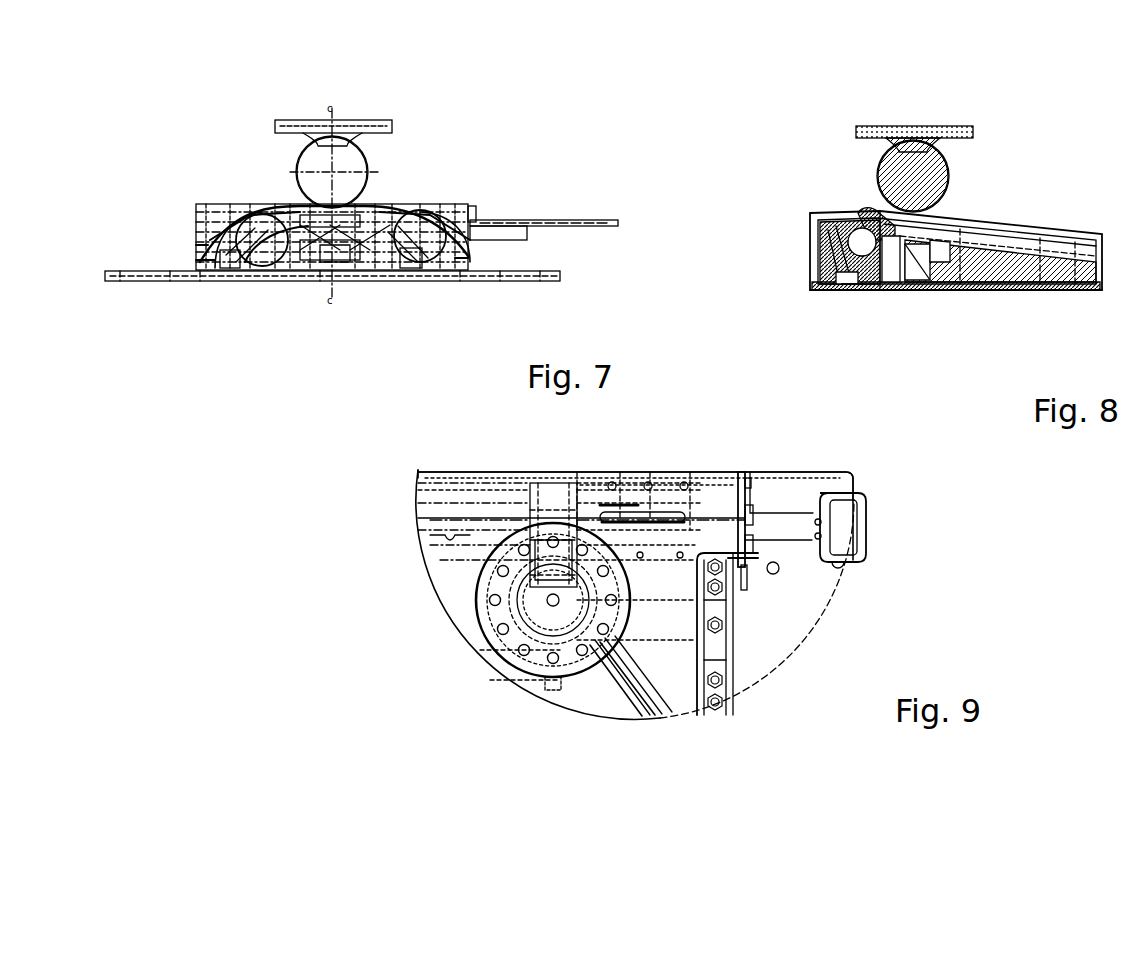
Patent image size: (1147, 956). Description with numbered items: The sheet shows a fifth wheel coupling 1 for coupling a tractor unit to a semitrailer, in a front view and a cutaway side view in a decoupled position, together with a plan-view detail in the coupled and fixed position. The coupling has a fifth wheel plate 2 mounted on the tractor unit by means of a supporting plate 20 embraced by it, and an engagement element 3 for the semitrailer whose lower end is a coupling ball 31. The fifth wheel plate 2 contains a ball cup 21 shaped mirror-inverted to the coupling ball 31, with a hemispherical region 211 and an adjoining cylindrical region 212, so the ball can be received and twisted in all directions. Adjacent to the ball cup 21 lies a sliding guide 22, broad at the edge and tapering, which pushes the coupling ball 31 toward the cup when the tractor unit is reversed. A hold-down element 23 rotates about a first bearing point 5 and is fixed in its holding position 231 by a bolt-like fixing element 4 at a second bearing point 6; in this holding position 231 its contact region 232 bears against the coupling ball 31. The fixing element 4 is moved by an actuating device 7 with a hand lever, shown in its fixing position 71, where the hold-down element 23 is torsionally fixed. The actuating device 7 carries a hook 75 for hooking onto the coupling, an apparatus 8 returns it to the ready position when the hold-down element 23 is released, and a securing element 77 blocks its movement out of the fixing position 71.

In FIG. 7, the fifth wheel coupling 1 is at (168, 76).
In FIG. 8, the fifth wheel coupling 1 is at (792, 85).
In FIG. 9, the fifth wheel coupling 1 is at (935, 586).
In FIG. 7, the fifth wheel plate 2 is at (470, 262).
In FIG. 8, the fifth wheel plate 2 is at (1005, 285).
In FIG. 9, the fifth wheel plate 2 is at (530, 493).
In FIG. 7, the engagement element 3 is at (360, 126).
In FIG. 8, the engagement element 3 is at (945, 128).
In FIG. 9, the engagement element 3 is at (535, 618).
In FIG. 7, the coupling ball 31 is at (340, 168).
In FIG. 8, the coupling ball 31 is at (940, 163).
In FIG. 9, the fixing element 4 is at (528, 518).
In FIG. 8, the first bearing point 5 is at (842, 282).
In FIG. 8, the second bearing point 6 is at (812, 237).
In FIG. 7, the actuating device 7 is at (535, 222).
In FIG. 9, the actuating device 7 is at (760, 526).
In FIG. 9, the apparatus 8 is at (608, 492).
In FIG. 7, the supporting plate 20 is at (145, 270).
In FIG. 9, the supporting plate 20 is at (812, 487).
In FIG. 8, the ball cup 21 is at (870, 210).
In FIG. 7, the sliding guide 22 is at (306, 238).
In FIG. 8, the sliding guide 22 is at (1028, 238).
In FIG. 9, the sliding guide 22 is at (585, 687).
In FIG. 8, the hold-down element 23 is at (810, 258).
In FIG. 9, the hold-down element 23 is at (556, 507).
In FIG. 9, the fixing position 71 is at (900, 518).
In FIG. 9, the hook 75 is at (683, 518).
In FIG. 9, the securing element 77 is at (745, 582).
In FIG. 8, the hemispherical region 211 is at (920, 270).
In FIG. 8, the cylindrical region 212 is at (932, 266).
In FIG. 8, the holding position 231 is at (846, 312).
In FIG. 7, the contact region 232 is at (340, 252).
In FIG. 8, the contact region 232 is at (882, 275).